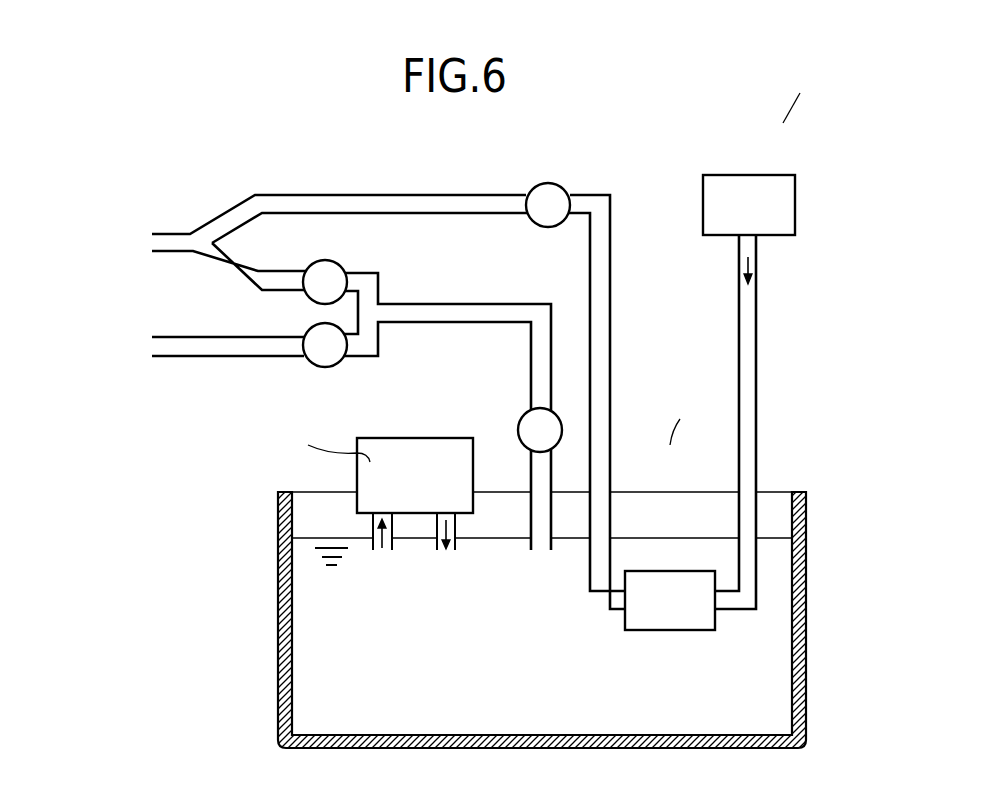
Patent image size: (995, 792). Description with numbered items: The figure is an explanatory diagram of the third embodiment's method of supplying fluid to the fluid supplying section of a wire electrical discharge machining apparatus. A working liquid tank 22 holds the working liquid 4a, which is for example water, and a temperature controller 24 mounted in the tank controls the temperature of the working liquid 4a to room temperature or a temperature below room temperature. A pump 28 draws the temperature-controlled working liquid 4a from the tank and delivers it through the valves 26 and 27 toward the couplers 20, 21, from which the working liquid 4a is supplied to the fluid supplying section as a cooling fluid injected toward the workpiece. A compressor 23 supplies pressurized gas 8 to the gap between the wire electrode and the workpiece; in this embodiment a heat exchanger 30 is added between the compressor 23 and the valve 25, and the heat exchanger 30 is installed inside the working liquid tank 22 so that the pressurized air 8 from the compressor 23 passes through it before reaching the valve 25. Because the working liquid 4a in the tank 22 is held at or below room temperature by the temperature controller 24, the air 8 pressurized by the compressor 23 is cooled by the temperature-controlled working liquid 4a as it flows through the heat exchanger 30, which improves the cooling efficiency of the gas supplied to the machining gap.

The gas 8 is at (757, 266).
The coupler 20 is at (147, 243).
The coupler 21 is at (147, 347).
The working liquid tank 22 is at (806, 522).
The compressor 23 is at (780, 175).
The temperature controller 24 is at (450, 438).
The valve 25 is at (564, 190).
The valve 26 is at (341, 266).
The valve 27 is at (341, 361).
The pump 28 is at (523, 415).
The heat exchanger 30 is at (668, 571).
The working liquid 4a is at (778, 543).